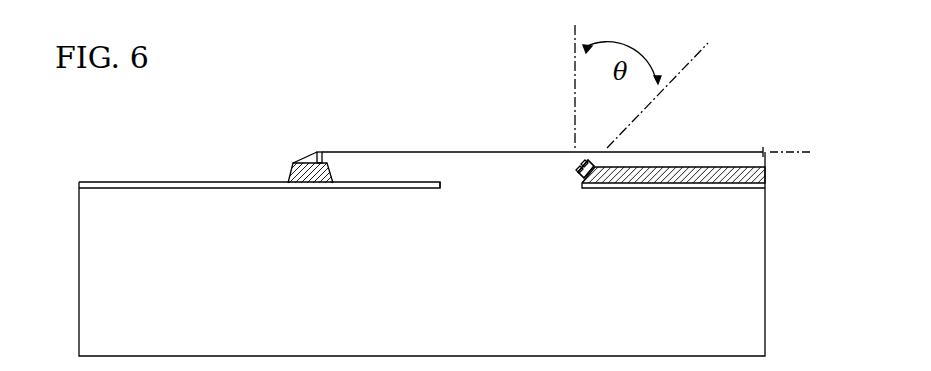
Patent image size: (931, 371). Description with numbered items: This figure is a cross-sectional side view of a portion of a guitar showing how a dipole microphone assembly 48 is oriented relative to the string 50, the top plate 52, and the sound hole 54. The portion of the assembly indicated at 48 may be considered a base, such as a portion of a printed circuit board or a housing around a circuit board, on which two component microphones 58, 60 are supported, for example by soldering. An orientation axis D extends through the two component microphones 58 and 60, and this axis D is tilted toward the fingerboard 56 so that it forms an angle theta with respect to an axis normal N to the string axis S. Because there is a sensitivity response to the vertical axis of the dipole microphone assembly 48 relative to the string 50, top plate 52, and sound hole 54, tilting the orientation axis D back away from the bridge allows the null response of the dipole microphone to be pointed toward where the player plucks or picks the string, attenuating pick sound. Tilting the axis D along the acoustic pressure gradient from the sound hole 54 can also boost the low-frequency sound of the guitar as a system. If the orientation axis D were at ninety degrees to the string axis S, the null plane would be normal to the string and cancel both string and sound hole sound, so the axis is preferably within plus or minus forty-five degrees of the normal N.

The dipole microphone assembly 48 is at (580, 178).
The string 50 is at (450, 151).
The top plate 52 is at (231, 181).
The sound hole 54 is at (461, 186).
The fingerboard 56 is at (713, 178).
The component microphone 58 is at (577, 168).
The component microphone 60 is at (323, 155).
The normal axis N is at (575, 78).
The orientation axis D is at (648, 102).
The string axis S is at (772, 152).